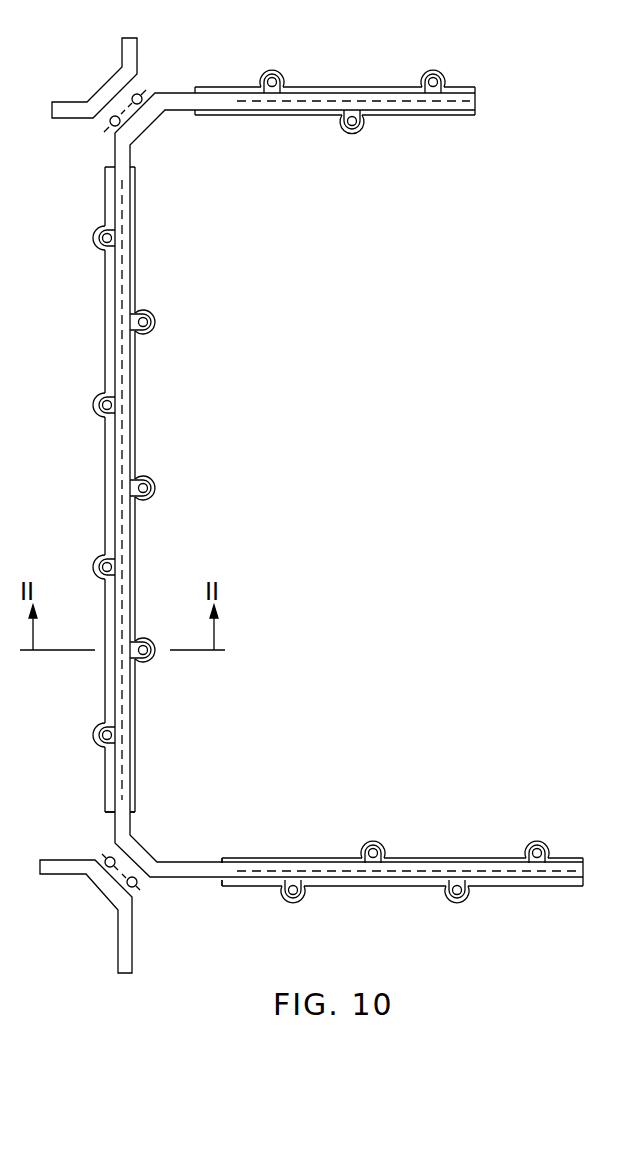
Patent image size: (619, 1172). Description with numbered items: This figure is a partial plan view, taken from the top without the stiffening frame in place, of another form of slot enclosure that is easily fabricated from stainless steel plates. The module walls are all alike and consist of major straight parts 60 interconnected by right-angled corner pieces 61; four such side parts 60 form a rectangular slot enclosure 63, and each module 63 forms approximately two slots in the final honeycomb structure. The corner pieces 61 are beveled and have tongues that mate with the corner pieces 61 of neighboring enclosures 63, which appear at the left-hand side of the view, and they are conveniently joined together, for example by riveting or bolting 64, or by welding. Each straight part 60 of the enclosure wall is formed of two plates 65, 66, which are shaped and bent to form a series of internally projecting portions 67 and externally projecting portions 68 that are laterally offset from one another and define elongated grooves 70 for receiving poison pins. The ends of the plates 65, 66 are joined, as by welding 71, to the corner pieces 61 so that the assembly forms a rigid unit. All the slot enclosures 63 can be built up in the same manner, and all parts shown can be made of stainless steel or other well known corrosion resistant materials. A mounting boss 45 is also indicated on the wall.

The mounting boss 45 is at (353, 128).
The straight part 60 is at (307, 491).
The corner piece 61 is at (80, 101).
The slot enclosure 63 is at (78, 39).
The riveting or bolting 64 is at (143, 94).
The plate 65 is at (313, 491).
The plate 66 is at (317, 107).
The internally projecting portion 67 is at (157, 478).
The externally projecting portion 68 is at (97, 555).
The elongated groove 70 is at (157, 501).
The welding 71 is at (135, 817).